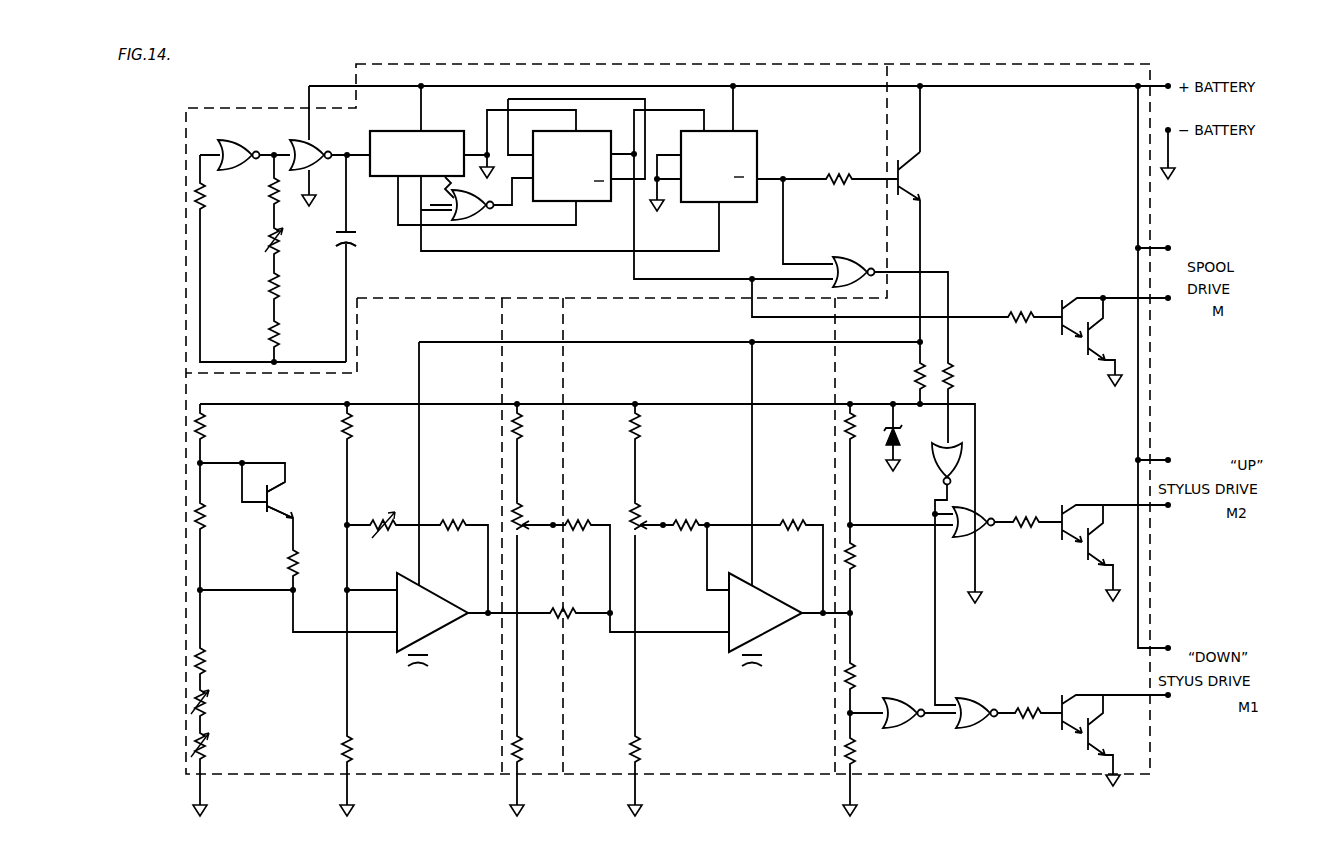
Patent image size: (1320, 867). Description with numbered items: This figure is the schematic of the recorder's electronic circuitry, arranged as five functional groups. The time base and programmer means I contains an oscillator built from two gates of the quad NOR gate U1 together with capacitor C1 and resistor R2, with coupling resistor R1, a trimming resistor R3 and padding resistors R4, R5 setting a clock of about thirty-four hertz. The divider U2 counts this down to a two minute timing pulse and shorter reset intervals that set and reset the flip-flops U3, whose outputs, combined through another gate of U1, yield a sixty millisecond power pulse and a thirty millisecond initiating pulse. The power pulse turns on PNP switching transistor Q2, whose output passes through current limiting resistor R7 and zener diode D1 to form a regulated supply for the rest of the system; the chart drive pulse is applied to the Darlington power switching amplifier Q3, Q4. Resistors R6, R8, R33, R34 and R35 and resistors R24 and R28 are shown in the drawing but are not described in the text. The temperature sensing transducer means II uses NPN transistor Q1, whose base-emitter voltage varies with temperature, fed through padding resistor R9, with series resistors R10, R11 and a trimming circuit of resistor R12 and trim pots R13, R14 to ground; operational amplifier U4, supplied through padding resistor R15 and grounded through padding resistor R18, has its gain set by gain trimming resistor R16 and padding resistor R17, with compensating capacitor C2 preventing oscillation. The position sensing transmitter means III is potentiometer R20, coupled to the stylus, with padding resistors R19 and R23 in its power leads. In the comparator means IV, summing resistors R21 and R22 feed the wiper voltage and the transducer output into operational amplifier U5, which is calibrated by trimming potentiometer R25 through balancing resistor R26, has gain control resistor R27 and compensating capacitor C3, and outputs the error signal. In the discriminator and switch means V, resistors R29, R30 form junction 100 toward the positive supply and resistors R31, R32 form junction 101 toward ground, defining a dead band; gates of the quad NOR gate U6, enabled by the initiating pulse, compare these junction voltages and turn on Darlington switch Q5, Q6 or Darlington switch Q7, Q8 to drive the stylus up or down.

The time base and programmer means I is at (587, 70).
The temperature sensing transducer means II is at (325, 789).
The position sensing transmitter means III is at (546, 778).
The comparator means IV is at (708, 778).
The discriminator and switch means V is at (1024, 788).
The quad NOR gate U1 is at (533, 210).
The divider U2 is at (425, 155).
The flip-flops U3 is at (643, 168).
The operational amplifier U4 is at (432, 612).
The operational amplifier U5 is at (765, 612).
The quad NOR gate U6 is at (944, 588).
The coupling resistor R1 is at (212, 195).
The resistor R2 is at (286, 190).
The trimming resistor R3 is at (259, 240).
The padding resistor R4 is at (257, 285).
The padding resistor R5 is at (257, 333).
The resistor R6 is at (838, 171).
The current limiting resistor R7 is at (908, 375).
The resistor R8 is at (1020, 308).
The padding resistor R9 is at (212, 425).
The series resistor R10 is at (217, 515).
The series resistor R11 is at (278, 562).
The resistor R12 is at (217, 660).
The trimming resistor R13 is at (216, 702).
The trim pot R14 is at (216, 745).
The padding resistor R15 is at (364, 425).
The gain trimming resistor R16 is at (379, 513).
The padding resistor R17 is at (452, 509).
The padding resistor R18 is at (364, 748).
The padding resistor R19 is at (534, 425).
The potentiometer R20 is at (535, 511).
The summing resistor R21 is at (579, 535).
The summing resistor R22 is at (562, 603).
The padding resistor R23 is at (534, 748).
The resistor R24 is at (652, 425).
The trimming potentiometer R25 is at (653, 511).
The balancing resistor R26 is at (683, 536).
The gain control resistor R27 is at (789, 511).
The resistor R28 is at (652, 748).
The resistor R29 is at (830, 425).
The resistor R30 is at (867, 555).
The resistor R31 is at (867, 675).
The resistor R32 is at (867, 750).
The resistor R33 is at (965, 375).
The resistor R34 is at (1026, 532).
The resistor R35 is at (1031, 724).
The capacitor C1 is at (334, 249).
The compensating capacitor C2 is at (405, 673).
The compensating capacitor C3 is at (740, 673).
The zener diode D1 is at (882, 437).
The temperature responsive NPN transistor Q1 is at (287, 500).
The PNP switching transistor Q2 is at (923, 176).
The power switching amplifier transistor Q3 is at (1108, 308).
The power switching amplifier transistor Q4 is at (1103, 336).
The NPN transistor switch Q5 is at (1107, 516).
The NPN transistor switch Q6 is at (1103, 547).
The NPN transistor switch Q7 is at (1107, 705).
The NPN transistor switch Q8 is at (1103, 735).
The junction 100 is at (852, 523).
The junction 101 is at (846, 717).